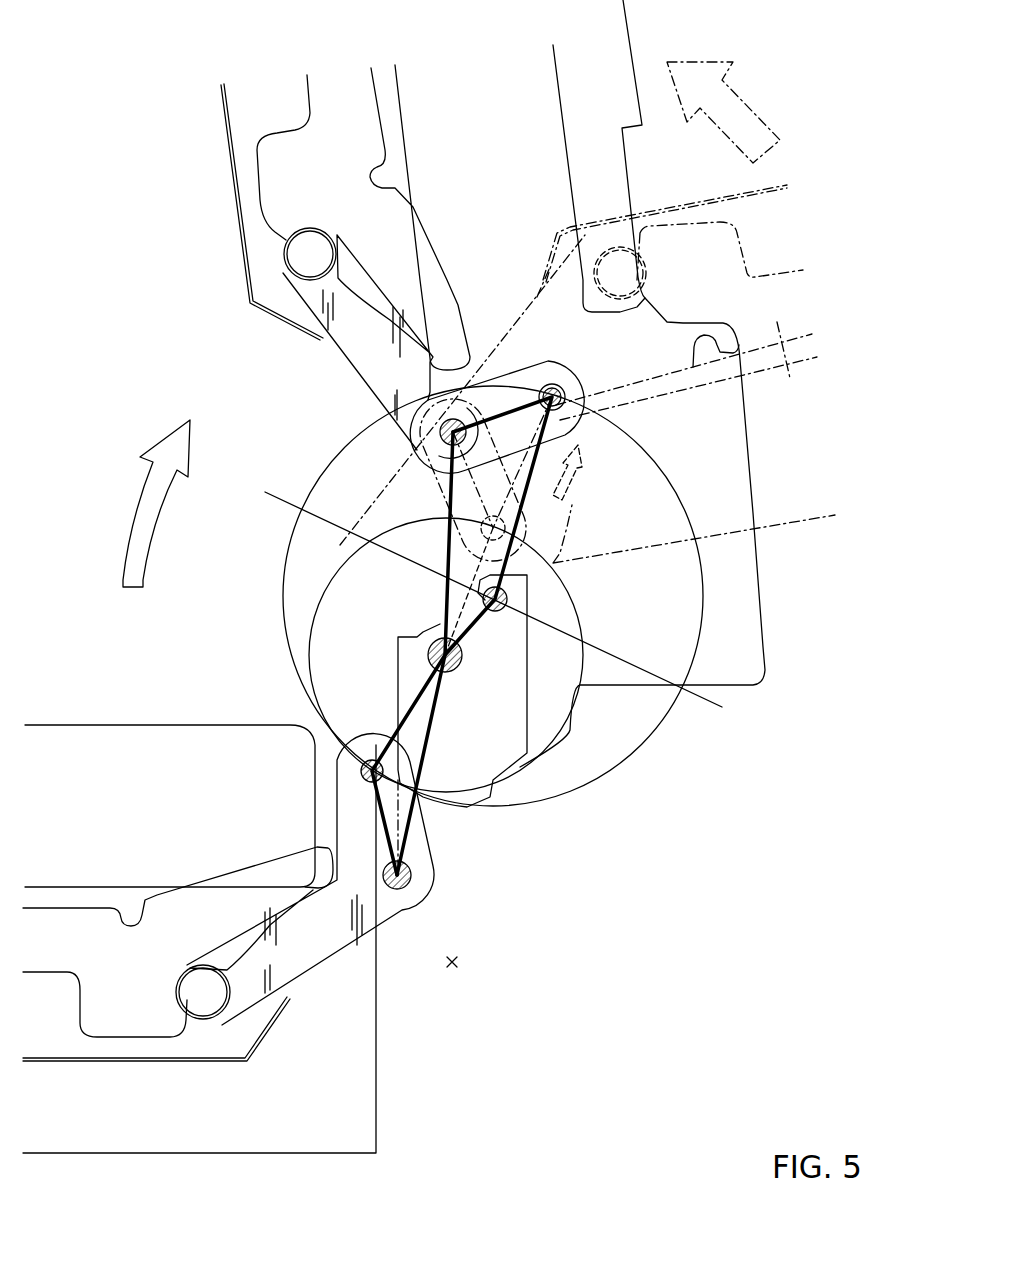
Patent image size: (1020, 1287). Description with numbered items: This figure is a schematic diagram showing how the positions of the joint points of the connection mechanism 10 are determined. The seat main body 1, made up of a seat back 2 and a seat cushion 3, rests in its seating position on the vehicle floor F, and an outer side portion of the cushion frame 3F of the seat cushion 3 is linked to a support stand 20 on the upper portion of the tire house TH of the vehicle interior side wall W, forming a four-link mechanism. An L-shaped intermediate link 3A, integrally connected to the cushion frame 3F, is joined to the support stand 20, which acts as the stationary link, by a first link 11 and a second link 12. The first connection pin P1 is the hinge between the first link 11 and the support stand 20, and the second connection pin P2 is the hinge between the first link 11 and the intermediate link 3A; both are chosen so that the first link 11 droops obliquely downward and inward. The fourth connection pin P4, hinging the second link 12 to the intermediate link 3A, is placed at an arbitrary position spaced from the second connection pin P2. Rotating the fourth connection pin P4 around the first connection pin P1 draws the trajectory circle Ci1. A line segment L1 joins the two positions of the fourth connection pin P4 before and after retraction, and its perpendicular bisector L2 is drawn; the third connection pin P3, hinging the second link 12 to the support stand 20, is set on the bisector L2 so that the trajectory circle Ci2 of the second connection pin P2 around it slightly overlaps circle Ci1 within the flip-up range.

The seat main body 1 is at (549, 76).
The seat back 2 is at (552, 162).
The seat cushion 3 is at (362, 115).
The intermediate link 3A is at (375, 355).
The cushion frame 3F is at (285, 256).
The connection mechanism 10 is at (294, 423).
The first link 11 is at (445, 537).
The second link 12 is at (520, 543).
The support stand 20 is at (510, 690).
The first connection pin P1 is at (437, 647).
The second connection pin P2 is at (447, 434).
The third connection pin P3 is at (508, 600).
The fourth connection pin P4 is at (556, 403).
The line segment L1 is at (410, 677).
The perpendicular bisector L2 is at (330, 521).
The trajectory circle Ci1 is at (333, 577).
The trajectory circle Ci2 is at (283, 530).
The tire house TH is at (457, 962).
The vehicle interior side wall W is at (627, 50).
The vehicle floor F is at (95, 1153).